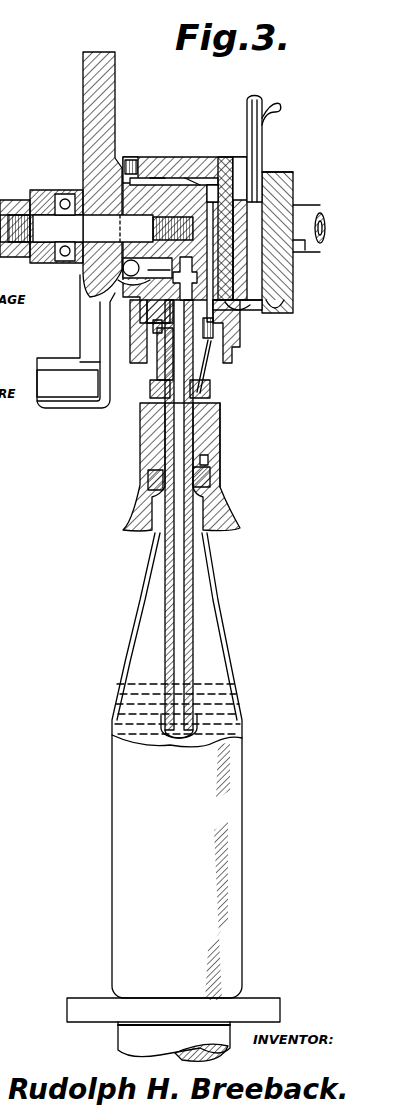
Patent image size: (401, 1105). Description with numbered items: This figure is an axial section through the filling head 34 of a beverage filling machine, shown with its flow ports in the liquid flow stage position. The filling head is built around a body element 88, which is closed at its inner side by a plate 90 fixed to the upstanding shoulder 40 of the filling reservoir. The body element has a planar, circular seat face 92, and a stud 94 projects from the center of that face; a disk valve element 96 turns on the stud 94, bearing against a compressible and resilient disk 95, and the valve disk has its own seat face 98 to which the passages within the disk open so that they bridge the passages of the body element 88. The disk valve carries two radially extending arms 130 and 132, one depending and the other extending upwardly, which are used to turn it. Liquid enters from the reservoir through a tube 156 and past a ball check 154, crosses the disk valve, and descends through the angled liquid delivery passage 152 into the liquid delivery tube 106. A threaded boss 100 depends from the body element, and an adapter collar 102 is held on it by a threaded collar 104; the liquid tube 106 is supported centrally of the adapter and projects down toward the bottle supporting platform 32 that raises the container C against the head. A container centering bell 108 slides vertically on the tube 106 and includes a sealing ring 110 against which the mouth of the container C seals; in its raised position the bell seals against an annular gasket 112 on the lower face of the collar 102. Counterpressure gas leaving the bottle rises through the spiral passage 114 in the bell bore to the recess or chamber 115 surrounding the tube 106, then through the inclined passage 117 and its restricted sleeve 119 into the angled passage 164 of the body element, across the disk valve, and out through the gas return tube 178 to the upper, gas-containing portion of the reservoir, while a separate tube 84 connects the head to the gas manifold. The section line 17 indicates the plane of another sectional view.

The radially extending arm 132 is at (100, 90).
The section line 17 is at (133, 160).
The filling head 34 is at (234, 157).
The stud 94 is at (108, 256).
The disk valve element 96 is at (96, 182).
The compressible resilient disk 95 is at (156, 158).
The seat face 92 is at (168, 160).
The body element 88 is at (186, 160).
The seat face of valve disk 98 is at (124, 273).
The angled liquid delivery passage 152 is at (150, 302).
The upstanding shoulder 40 is at (295, 173).
The gas return tube 178 is at (262, 100).
The tube 84 is at (266, 114).
The ball check 154 is at (296, 193).
The tube 156 is at (312, 252).
The angled passage 164 is at (255, 288).
The plate 90 is at (275, 308).
The threaded boss 100 is at (235, 318).
The sleeve 119 is at (241, 342).
The recess or chamber 115 is at (142, 400).
The radially extending arm 130 is at (72, 410).
The liquid delivery tube 106 is at (192, 606).
The threaded collar 104 is at (224, 362).
The passage 117 is at (212, 378).
The adapter collar 102 is at (210, 392).
The annular gasket 112 is at (214, 406).
The spiral passage 114 is at (222, 436).
The sealing ring 110 is at (210, 466).
The container centering bell 108 is at (210, 492).
The container C is at (138, 620).
The bottle supporting platform 32 is at (258, 997).